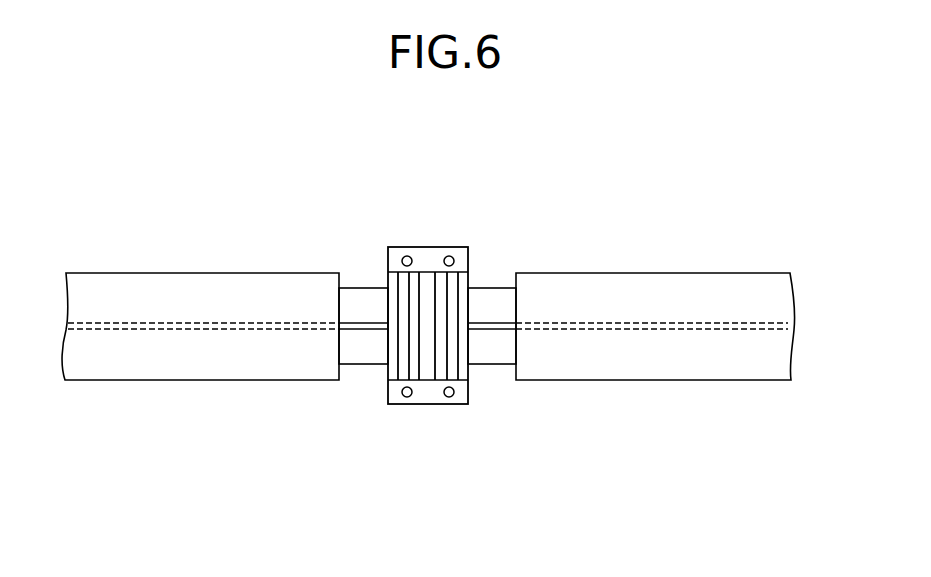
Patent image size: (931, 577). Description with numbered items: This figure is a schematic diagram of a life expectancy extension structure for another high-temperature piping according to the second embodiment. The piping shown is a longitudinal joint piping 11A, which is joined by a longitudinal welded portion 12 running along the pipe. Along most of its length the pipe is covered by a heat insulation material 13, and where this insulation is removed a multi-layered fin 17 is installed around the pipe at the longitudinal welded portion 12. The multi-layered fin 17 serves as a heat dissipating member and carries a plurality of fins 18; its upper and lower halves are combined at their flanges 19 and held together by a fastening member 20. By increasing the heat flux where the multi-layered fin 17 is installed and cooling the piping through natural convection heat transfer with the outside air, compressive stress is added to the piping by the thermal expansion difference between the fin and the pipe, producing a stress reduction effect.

The longitudinal joint piping 11A is at (490, 366).
The longitudinal welded portion 12 is at (361, 330).
The heat insulation material 13 is at (199, 283).
The multi-layered fin 17 is at (432, 359).
The fins 18 is at (469, 278).
The flanges 19 is at (422, 405).
The fastening member 20 is at (451, 398).